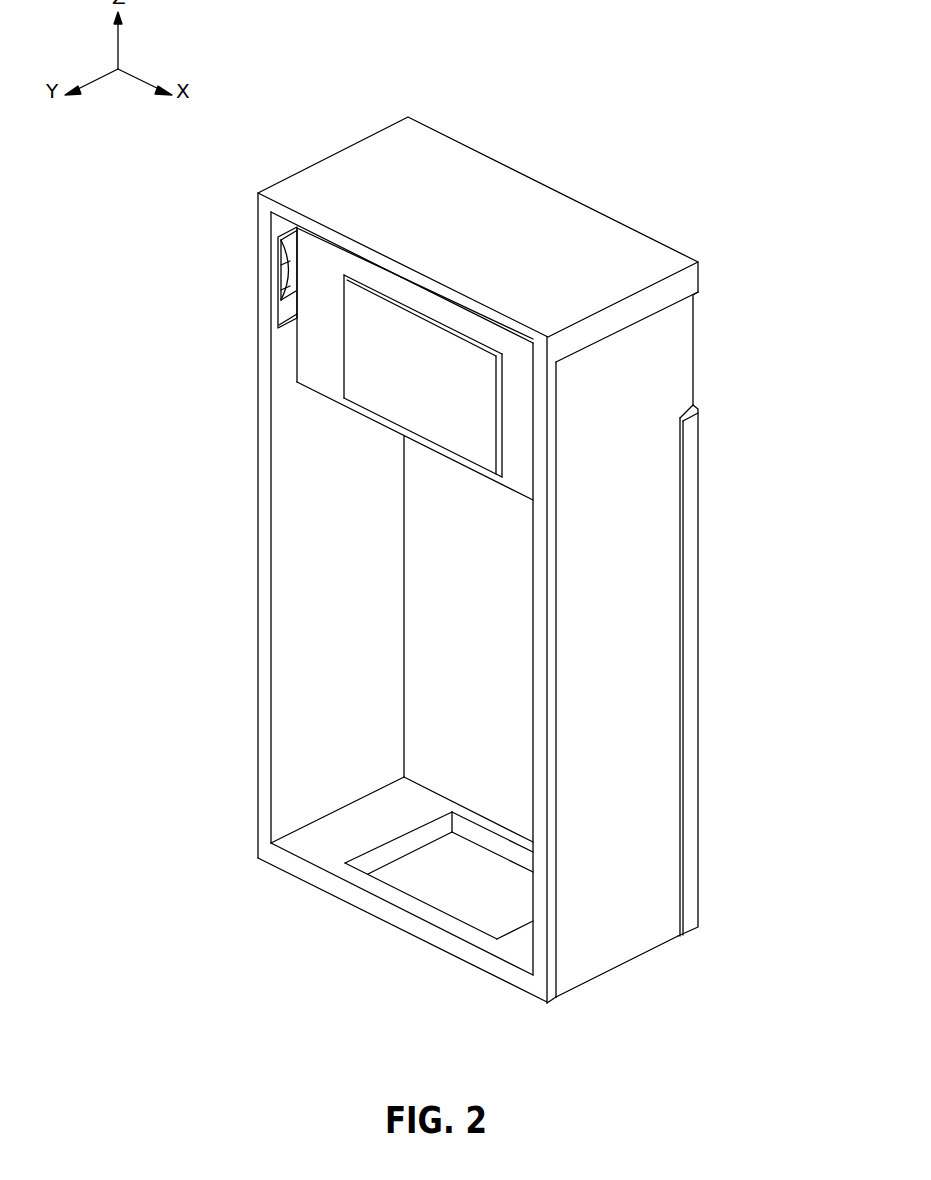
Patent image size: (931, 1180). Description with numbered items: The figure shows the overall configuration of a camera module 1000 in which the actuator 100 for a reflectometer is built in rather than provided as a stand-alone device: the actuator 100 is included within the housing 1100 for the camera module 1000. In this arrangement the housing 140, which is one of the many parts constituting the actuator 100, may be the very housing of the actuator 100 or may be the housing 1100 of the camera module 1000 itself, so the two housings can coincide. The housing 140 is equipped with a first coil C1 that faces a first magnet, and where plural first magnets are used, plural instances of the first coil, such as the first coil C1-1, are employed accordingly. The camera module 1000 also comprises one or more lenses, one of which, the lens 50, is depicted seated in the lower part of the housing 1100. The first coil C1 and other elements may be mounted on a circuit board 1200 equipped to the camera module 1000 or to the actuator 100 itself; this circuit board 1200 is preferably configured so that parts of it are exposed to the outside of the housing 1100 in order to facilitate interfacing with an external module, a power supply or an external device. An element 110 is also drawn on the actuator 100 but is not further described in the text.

The camera module 1000 is at (551, 150).
The circuit board 1200 is at (632, 668).
The housing for the camera module 1100 is at (320, 638).
The housing 140 is at (338, 761).
The actuator for reflectometer 100 is at (230, 284).
The first coil C1 is at (288, 250).
The first coil instance C1-1 is at (288, 278).
The panel / bracket plate 110 is at (383, 366).
The lens 50 is at (462, 895).